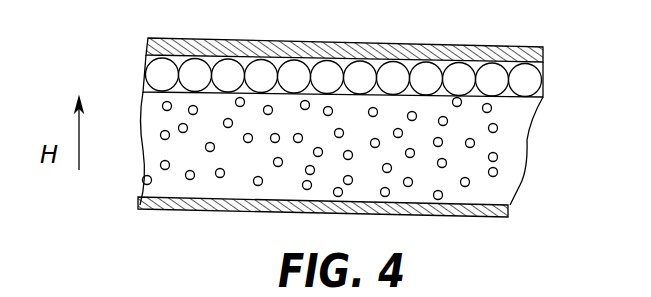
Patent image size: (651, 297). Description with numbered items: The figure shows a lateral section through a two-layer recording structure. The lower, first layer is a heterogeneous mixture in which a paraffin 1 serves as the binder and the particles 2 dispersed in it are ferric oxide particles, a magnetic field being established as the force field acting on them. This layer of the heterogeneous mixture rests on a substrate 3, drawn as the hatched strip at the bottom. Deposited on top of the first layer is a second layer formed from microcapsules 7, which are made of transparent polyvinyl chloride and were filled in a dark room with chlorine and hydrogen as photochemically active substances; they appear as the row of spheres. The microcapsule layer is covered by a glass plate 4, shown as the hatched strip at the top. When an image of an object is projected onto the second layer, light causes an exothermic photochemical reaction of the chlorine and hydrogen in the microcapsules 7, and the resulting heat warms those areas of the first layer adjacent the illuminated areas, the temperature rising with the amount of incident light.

The paraffin 1 is at (175, 185).
The particles 2 is at (498, 157).
The substrate 3 is at (483, 217).
The glass plate 4 is at (503, 47).
The microcapsules 7 is at (330, 70).